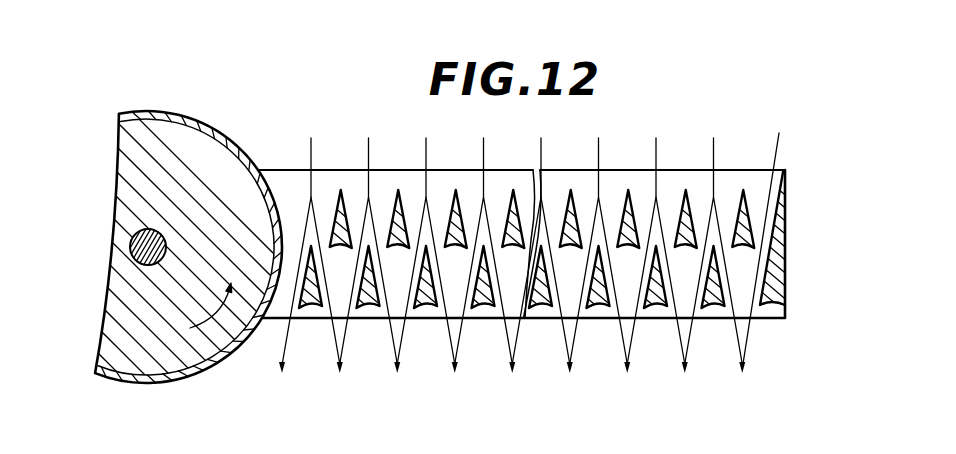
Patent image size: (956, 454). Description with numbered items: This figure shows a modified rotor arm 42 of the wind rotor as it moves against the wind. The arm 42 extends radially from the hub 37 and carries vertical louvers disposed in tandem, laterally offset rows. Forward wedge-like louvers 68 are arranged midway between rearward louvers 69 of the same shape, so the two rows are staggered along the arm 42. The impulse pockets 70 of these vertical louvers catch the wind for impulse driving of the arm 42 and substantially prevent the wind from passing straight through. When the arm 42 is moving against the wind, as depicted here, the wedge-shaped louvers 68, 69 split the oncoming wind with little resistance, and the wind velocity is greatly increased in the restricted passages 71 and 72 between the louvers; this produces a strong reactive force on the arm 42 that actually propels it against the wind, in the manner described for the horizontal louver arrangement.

The hub 37 is at (177, 357).
The rotor arm 42 is at (617, 170).
The forward wedge-like louvers 68 is at (452, 210).
The rearward louvers 69 is at (481, 293).
The impulse pockets 70 is at (423, 308).
The restricted passages 71 is at (355, 217).
The restricted passages 72 is at (320, 257).